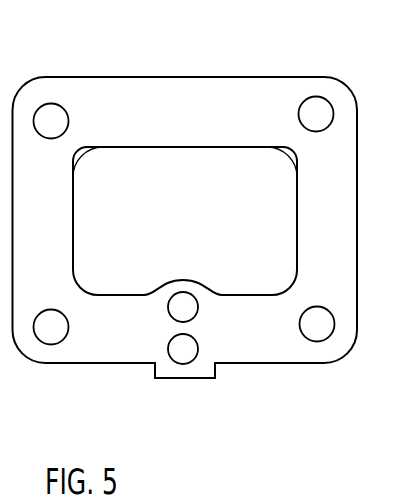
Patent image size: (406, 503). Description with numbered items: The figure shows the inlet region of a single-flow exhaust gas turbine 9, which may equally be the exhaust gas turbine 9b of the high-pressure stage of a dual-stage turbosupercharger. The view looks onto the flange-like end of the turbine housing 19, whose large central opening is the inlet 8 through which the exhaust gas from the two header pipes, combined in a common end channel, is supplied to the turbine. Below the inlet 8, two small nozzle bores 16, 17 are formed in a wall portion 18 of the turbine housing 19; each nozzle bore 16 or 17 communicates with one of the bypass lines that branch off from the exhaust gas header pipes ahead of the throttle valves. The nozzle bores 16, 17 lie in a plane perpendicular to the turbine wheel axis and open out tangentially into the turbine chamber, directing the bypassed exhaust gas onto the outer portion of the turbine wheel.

The exhaust gas turbine 9 is at (102, 66).
The exhaust gas turbine of the high-pressure stage 9b is at (185, 201).
The inlet 8 is at (282, 223).
The nozzle bore 16 is at (183, 307).
The nozzle bore 17 is at (183, 349).
The wall portion 18 is at (200, 375).
The turbine housing 19 is at (93, 365).